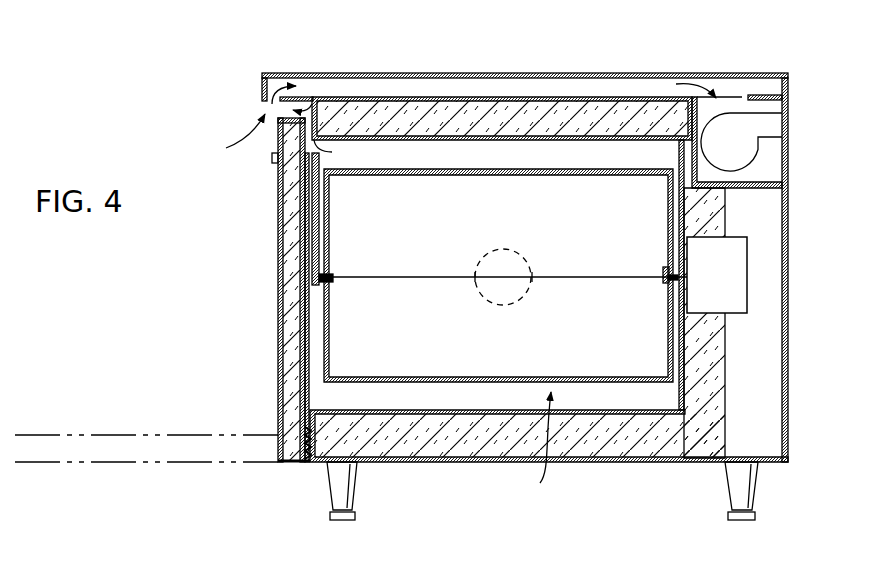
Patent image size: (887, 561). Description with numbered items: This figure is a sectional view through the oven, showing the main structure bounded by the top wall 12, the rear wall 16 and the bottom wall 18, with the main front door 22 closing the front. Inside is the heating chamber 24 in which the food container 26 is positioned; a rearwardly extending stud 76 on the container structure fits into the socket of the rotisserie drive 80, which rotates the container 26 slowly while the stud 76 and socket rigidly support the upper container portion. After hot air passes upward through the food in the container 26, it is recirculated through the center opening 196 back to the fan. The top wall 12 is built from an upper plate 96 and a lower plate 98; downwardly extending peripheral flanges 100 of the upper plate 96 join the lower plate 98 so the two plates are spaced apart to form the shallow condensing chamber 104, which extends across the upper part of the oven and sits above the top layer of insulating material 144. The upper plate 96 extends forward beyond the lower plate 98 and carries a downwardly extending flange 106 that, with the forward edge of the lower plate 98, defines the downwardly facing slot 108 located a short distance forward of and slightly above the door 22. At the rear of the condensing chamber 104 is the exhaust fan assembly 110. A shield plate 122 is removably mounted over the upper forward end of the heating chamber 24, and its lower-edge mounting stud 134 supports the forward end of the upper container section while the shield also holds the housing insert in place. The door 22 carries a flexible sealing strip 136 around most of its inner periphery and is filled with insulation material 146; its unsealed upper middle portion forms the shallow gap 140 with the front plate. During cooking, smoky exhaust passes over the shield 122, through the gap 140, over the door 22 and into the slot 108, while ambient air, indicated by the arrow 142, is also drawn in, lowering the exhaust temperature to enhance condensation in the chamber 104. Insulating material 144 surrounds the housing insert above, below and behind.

The top wall 12 is at (556, 275).
The rear wall 16 is at (788, 242).
The bottom wall 18 is at (482, 447).
The main front door 22 is at (249, 290).
The heating chamber 24 is at (437, 400).
The food container 26 is at (527, 446).
The stud 76 is at (663, 282).
The rotisserie drive 80 is at (752, 283).
The upper plate 96 is at (458, 73).
The lower plate 98 is at (398, 97).
The peripheral flanges 100 is at (788, 80).
The condensing chamber 104 is at (521, 74).
The flange 106 is at (261, 92).
The slot 108 is at (270, 103).
The exhaust fan assembly 110 is at (772, 152).
The shield plate 122 is at (319, 203).
The mounting stud 134 is at (333, 284).
The flexible sealing strip 136 is at (302, 474).
The gap 140 is at (333, 97).
The arrow 142 is at (240, 150).
The insulating material 144 is at (588, 112).
The insulation material 146 is at (278, 298).
The center opening 196 is at (530, 250).